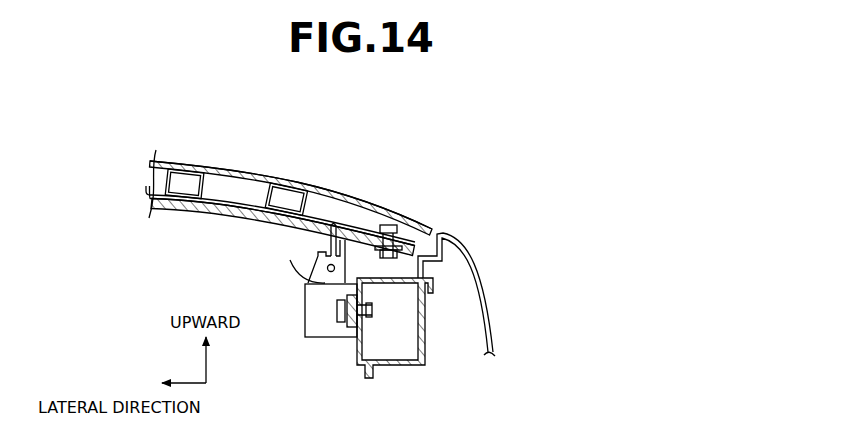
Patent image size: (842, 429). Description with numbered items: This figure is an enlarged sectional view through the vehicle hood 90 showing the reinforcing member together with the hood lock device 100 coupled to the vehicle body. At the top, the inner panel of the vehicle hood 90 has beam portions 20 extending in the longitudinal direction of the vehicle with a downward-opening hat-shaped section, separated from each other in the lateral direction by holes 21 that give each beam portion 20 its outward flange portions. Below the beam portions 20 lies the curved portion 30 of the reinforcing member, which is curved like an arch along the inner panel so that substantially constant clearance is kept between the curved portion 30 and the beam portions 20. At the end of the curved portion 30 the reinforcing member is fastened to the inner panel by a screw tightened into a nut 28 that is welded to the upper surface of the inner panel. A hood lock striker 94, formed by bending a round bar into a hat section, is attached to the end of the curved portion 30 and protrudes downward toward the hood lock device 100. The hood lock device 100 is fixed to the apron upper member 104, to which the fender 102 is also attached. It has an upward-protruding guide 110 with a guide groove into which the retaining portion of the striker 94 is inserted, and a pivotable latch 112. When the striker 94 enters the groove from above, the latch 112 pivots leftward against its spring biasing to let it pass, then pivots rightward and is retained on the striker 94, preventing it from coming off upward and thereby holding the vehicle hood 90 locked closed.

The beam portion 20 is at (188, 177).
The hole 21 is at (222, 204).
The curved portion 30 is at (173, 213).
The nut 28 is at (400, 228).
The hood lock striker 94 is at (333, 222).
The vehicle hood 90 is at (376, 135).
The hood lock device 100 is at (291, 345).
The fender 102 is at (485, 281).
The apron upper member 104 is at (432, 376).
The guide 110 is at (305, 302).
The latch 112 is at (306, 268).